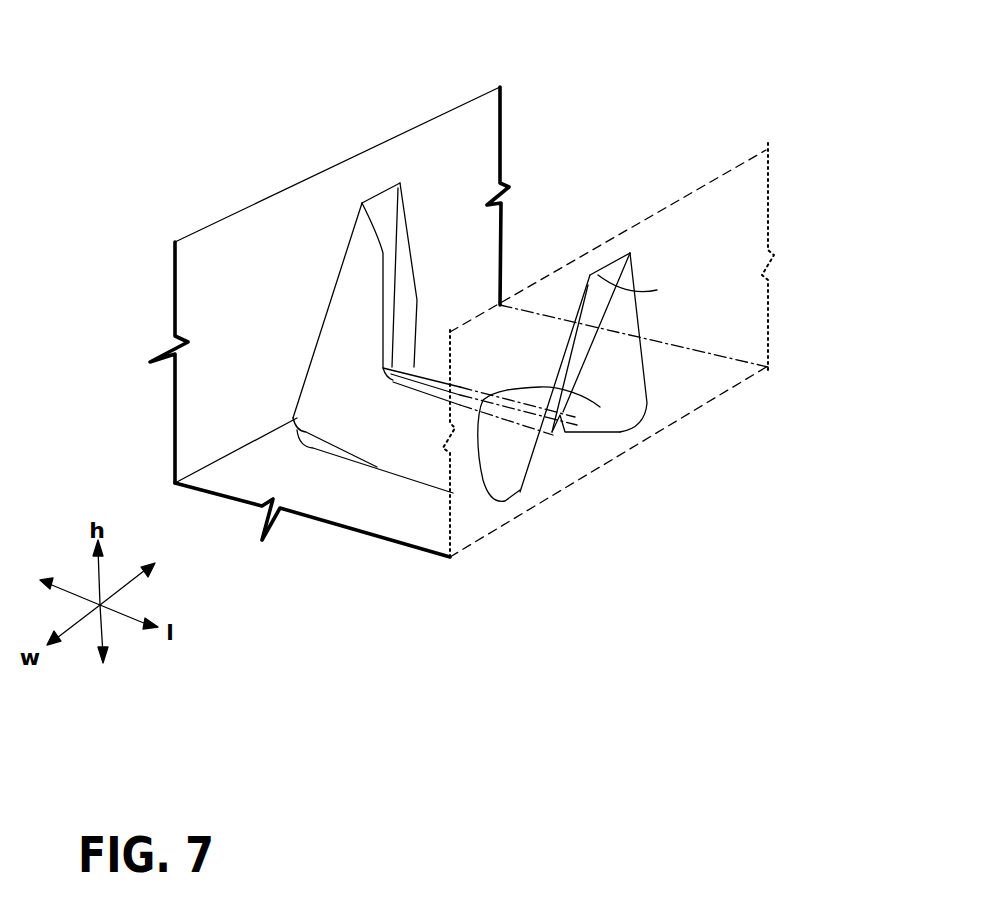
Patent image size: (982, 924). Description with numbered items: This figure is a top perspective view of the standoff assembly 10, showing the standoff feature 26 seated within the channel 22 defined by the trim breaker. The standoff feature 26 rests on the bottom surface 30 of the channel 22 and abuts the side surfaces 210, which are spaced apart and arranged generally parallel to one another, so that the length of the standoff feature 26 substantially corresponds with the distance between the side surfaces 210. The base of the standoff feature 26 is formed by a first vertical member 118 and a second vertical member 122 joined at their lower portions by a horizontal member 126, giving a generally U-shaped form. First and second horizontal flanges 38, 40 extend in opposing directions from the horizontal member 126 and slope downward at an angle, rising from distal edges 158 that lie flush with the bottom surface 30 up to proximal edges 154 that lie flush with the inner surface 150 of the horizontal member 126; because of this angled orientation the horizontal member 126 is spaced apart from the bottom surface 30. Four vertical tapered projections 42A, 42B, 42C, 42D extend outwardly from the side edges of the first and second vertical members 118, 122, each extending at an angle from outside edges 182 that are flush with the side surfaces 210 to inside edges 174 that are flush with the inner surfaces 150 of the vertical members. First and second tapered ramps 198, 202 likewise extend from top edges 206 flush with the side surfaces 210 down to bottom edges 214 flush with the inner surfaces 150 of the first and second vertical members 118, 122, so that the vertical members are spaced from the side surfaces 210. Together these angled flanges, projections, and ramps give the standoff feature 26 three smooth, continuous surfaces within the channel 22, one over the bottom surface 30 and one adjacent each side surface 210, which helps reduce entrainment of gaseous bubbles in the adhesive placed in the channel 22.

The standoff assembly 10 is at (430, 117).
The channel 22 is at (424, 516).
The standoff feature 26 is at (660, 311).
The bottom surface 30 is at (375, 510).
The first horizontal flange 38 is at (367, 447).
The second horizontal flange 40 is at (493, 415).
The vertical tapered projection 42A is at (333, 360).
The vertical tapered projection 42B is at (392, 210).
The vertical tapered projection 42C is at (560, 432).
The vertical tapered projection 42D is at (630, 380).
The first vertical member 118 is at (383, 300).
The second vertical member 122 is at (587, 328).
The horizontal member 126 is at (587, 348).
The inner surface 150 is at (403, 247).
The proximal edges 154 is at (430, 398).
The distal edges 158 is at (475, 397).
The inside edges 174 is at (383, 253).
The outside edges 182 is at (345, 265).
The first tapered ramp 198 is at (388, 214).
The second tapered ramp 202 is at (640, 287).
The top edges 206 is at (380, 192).
The side surfaces 210 is at (230, 222).
The bottom edges 214 is at (385, 250).